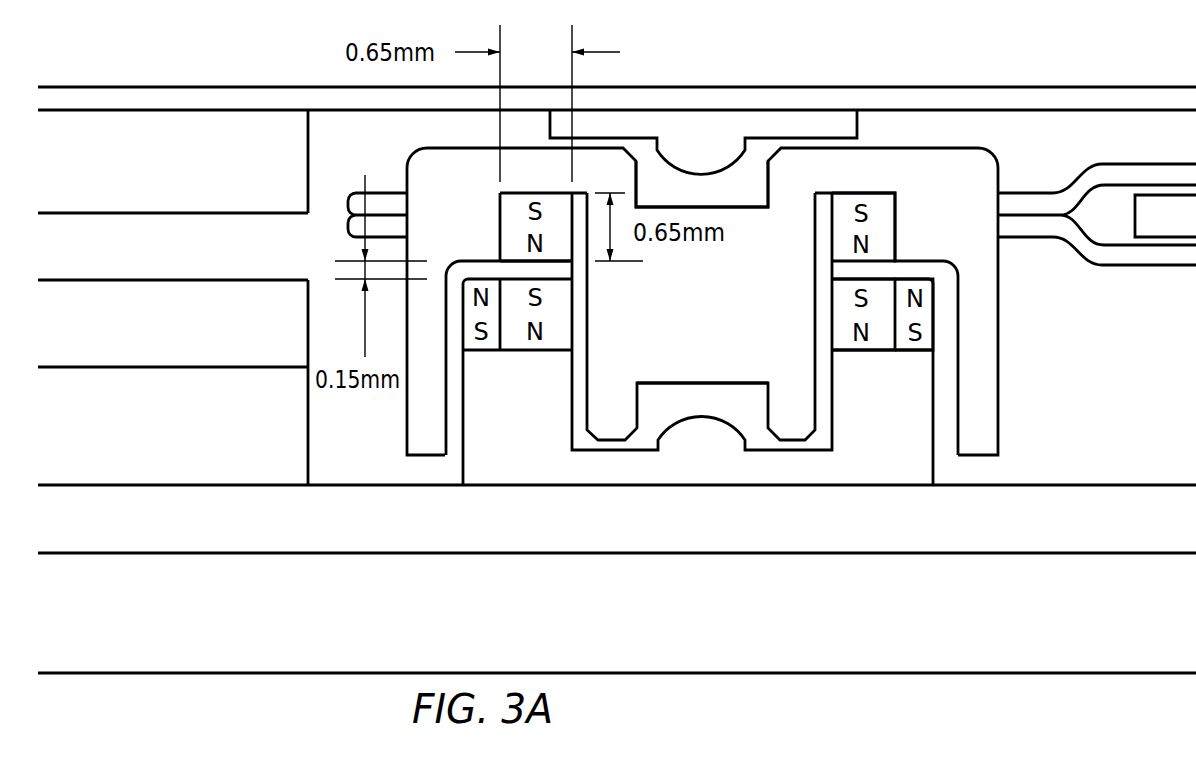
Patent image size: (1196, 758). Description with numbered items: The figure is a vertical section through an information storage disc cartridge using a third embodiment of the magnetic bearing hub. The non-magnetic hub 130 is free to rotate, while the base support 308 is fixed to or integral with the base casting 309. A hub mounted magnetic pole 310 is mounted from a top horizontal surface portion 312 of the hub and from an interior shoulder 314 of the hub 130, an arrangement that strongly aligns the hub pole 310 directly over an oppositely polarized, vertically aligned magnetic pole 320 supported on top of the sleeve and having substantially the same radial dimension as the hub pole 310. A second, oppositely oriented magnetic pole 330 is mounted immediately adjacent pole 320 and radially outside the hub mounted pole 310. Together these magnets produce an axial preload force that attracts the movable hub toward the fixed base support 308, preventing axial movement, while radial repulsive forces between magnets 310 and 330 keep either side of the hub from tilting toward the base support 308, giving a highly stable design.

The non-magnetic hub 130 is at (792, 365).
The base support 308 is at (542, 432).
The base casting 309 is at (1075, 538).
The hub mounted magnetic pole 310 is at (877, 202).
The top horizontal surface portion of the hub 312 is at (838, 183).
The interior shoulder 314 is at (897, 230).
The vertically aligned magnetic pole 320 is at (846, 342).
The oppositely aligned magnetic pole 330 is at (925, 320).